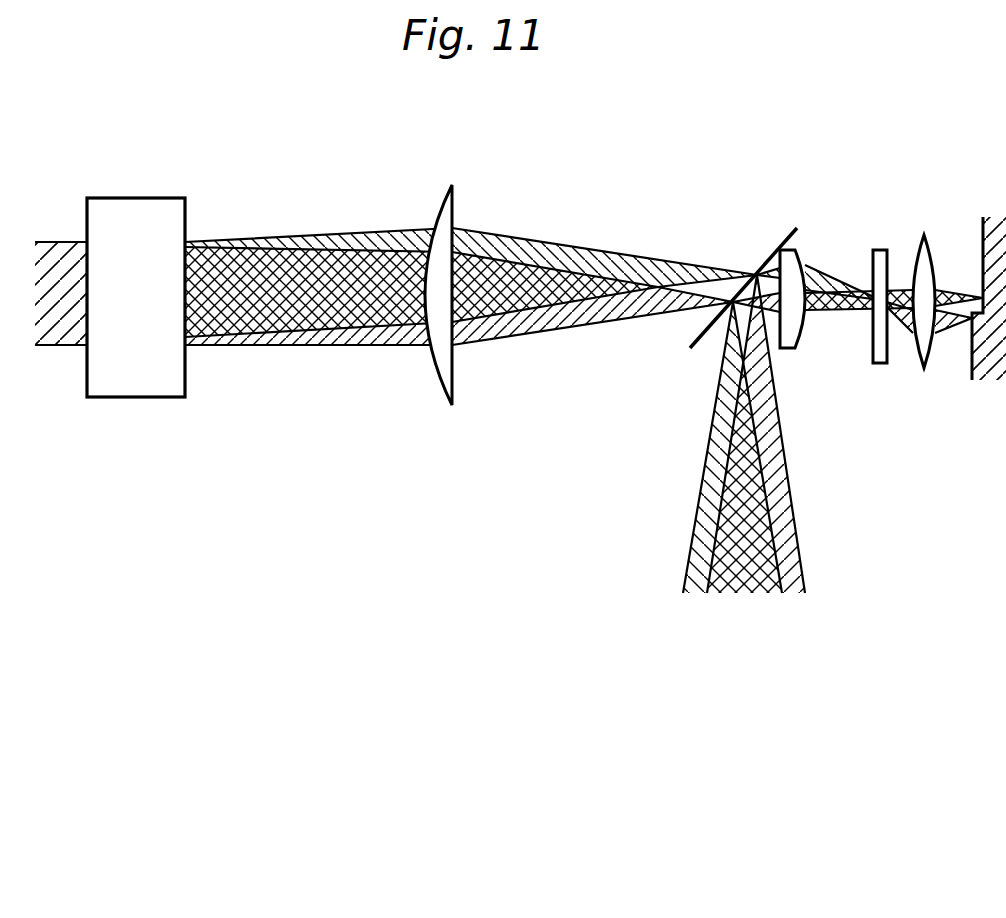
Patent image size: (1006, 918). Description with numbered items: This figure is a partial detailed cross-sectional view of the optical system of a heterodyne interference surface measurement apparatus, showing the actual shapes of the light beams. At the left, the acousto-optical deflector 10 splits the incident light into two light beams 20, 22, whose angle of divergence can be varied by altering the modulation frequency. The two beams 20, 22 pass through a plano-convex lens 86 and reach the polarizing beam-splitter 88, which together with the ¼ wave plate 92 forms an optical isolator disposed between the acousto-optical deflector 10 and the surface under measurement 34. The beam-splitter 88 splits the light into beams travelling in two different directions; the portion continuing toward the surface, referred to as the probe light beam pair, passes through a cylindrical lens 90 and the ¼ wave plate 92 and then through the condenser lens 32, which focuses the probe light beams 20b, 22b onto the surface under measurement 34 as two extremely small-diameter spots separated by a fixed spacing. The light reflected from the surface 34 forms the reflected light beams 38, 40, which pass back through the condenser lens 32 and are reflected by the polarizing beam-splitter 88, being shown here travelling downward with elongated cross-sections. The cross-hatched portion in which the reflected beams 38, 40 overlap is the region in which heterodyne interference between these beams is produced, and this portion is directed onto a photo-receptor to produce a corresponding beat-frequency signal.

The acousto-optical deflector 10 is at (140, 198).
The light beam 20 is at (623, 316).
The light beam 22 is at (668, 258).
The plano-convex lens 86 is at (455, 215).
The polarizing beam-splitter 88 is at (690, 350).
The cylindrical lens 90 is at (803, 250).
The ¼ wave plate 92 is at (880, 250).
The condenser lens 32 is at (924, 235).
The probe light beam 20b is at (948, 292).
The probe light beam 22b is at (945, 330).
The surface under measurement 34 is at (988, 217).
The reflected light beam 38 is at (707, 478).
The reflected light beam 40 is at (783, 478).